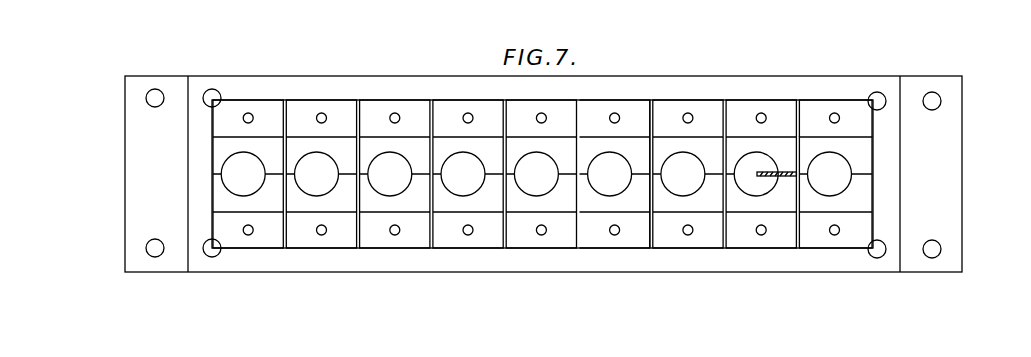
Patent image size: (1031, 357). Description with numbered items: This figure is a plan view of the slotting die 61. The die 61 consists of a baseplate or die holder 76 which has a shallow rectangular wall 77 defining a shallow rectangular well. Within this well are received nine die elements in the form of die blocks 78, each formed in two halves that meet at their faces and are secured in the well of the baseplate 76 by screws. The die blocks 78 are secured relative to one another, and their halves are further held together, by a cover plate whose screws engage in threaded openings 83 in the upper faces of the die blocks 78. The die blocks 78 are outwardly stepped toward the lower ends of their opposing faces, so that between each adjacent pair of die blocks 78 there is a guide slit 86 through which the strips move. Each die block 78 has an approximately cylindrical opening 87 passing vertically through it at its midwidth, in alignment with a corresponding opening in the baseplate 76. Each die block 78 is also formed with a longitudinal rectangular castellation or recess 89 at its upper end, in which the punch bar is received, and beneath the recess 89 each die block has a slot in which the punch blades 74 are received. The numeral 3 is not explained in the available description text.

The connector module 3 is at (307, 232).
The die 61 is at (313, 91).
The punch blades 74 is at (785, 171).
The baseplate or die holder 76 is at (945, 171).
The shallow rectangular wall 77 is at (193, 152).
The die blocks 78 is at (815, 113).
The threaded openings 83 is at (838, 114).
The guide slit 86 is at (648, 113).
The approximately cylindrical opening 87 is at (843, 168).
The longitudinal rectangular castellation or recess 89 is at (770, 146).